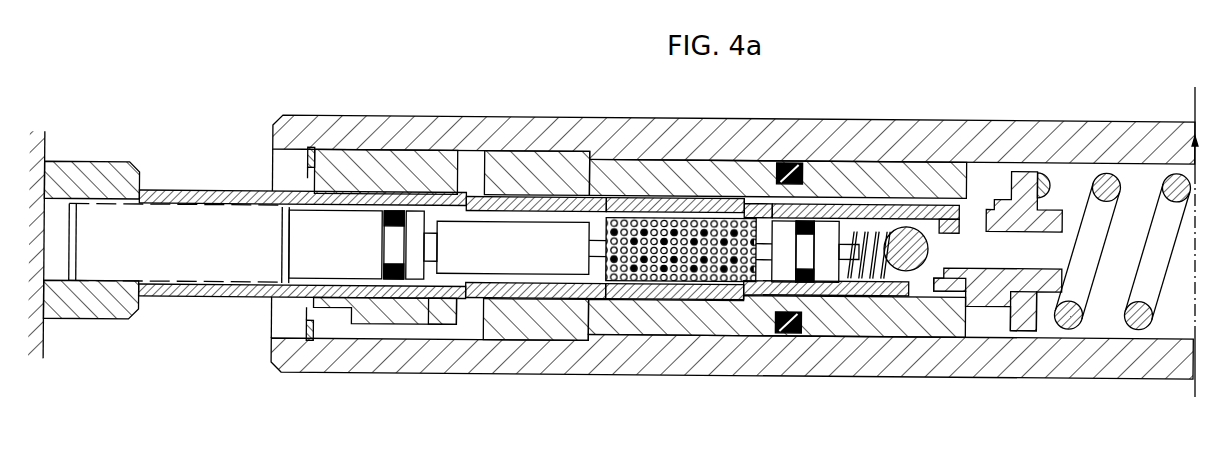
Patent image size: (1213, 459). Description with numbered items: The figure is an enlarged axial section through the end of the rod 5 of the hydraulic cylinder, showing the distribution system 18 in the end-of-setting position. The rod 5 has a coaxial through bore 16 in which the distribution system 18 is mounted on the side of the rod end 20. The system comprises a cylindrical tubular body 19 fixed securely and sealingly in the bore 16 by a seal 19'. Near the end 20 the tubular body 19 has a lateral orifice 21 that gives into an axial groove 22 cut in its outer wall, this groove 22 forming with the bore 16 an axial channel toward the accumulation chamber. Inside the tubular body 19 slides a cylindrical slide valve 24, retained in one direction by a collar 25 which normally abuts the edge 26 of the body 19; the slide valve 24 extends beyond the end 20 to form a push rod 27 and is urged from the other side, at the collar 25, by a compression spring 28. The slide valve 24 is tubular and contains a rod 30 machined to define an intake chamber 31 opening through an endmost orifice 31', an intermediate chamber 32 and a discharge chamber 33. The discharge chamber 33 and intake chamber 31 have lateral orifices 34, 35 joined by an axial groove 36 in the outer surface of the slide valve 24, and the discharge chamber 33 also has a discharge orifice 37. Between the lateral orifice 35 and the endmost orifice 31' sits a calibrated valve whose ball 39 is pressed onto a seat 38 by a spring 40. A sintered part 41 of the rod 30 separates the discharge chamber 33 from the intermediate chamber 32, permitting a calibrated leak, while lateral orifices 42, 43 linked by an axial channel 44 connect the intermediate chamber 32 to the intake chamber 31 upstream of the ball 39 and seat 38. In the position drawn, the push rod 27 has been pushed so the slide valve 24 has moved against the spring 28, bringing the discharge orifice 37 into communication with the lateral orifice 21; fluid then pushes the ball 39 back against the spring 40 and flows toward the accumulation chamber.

The rod 5 is at (1063, 160).
The through bore 16 is at (1130, 165).
The distribution system 18 is at (527, 188).
The tubular body 19 is at (777, 207).
The seal 19' is at (800, 205).
The end of rod 20 is at (272, 136).
The lateral orifice 21 is at (470, 317).
The axial groove 22 is at (378, 327).
The slide valve 24 is at (607, 195).
The collar 25 is at (1023, 327).
The edge 26 is at (973, 317).
The push rod 27 is at (105, 180).
The compression spring 28 is at (1072, 335).
The rod 30 is at (200, 235).
The intake chamber 31 is at (941, 338).
The endmost orifice 31' is at (1088, 296).
The intermediate chamber 32 is at (767, 277).
The discharge chamber 33 is at (524, 275).
The lateral orifices 34 is at (602, 290).
The lateral orifices 35 is at (913, 292).
The axial groove 36 is at (670, 285).
The discharge orifice 37 is at (453, 287).
The seat 38 is at (975, 217).
The ball 39 is at (905, 230).
The spring 40 is at (848, 275).
The part of rod 41 is at (655, 227).
The lateral orifice 42 is at (765, 210).
The lateral orifice 43 is at (985, 210).
The axial channel 44 is at (837, 200).